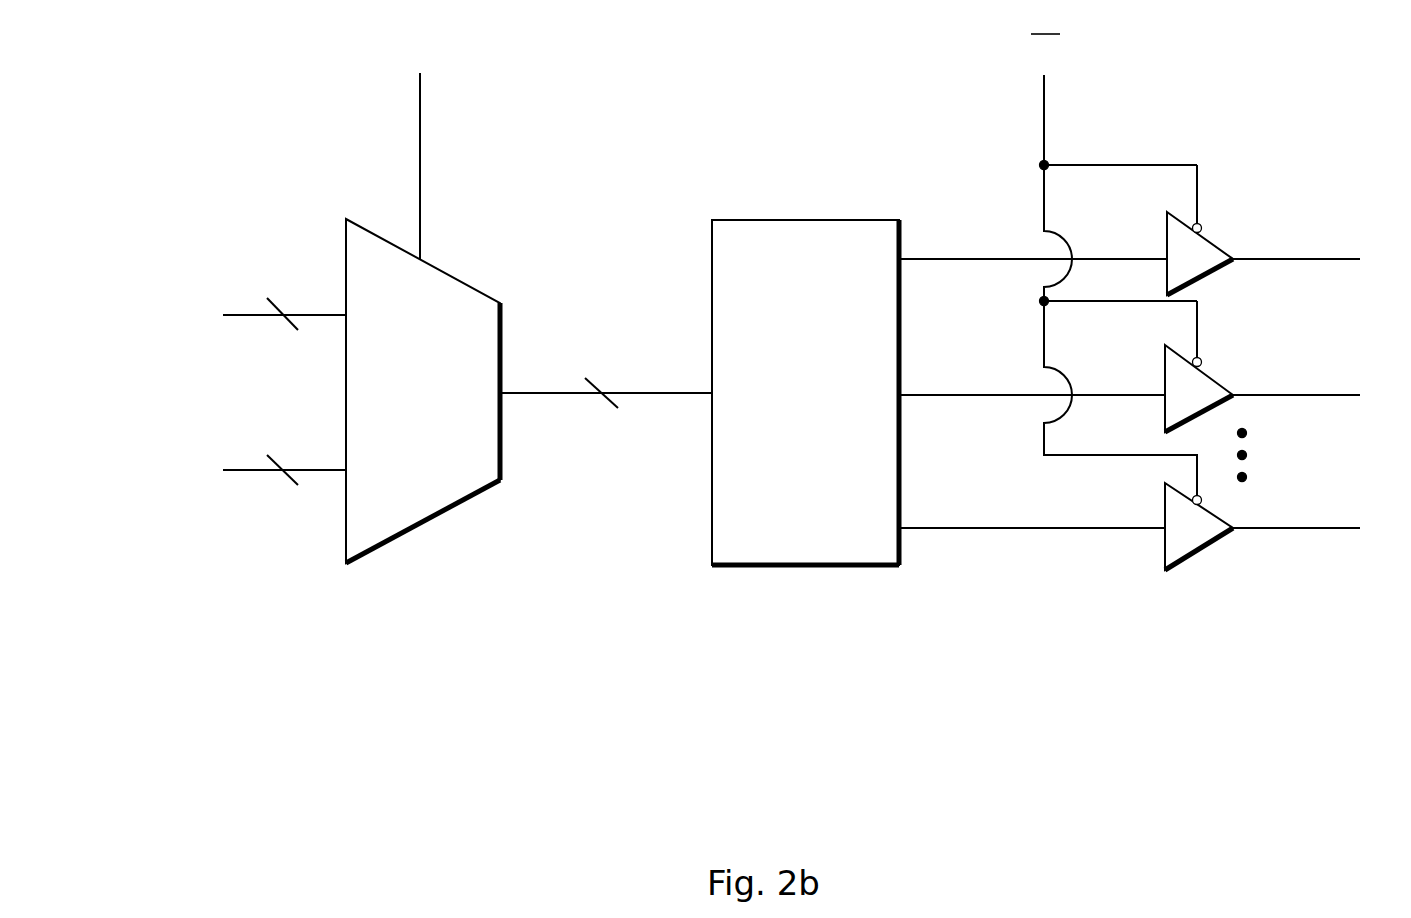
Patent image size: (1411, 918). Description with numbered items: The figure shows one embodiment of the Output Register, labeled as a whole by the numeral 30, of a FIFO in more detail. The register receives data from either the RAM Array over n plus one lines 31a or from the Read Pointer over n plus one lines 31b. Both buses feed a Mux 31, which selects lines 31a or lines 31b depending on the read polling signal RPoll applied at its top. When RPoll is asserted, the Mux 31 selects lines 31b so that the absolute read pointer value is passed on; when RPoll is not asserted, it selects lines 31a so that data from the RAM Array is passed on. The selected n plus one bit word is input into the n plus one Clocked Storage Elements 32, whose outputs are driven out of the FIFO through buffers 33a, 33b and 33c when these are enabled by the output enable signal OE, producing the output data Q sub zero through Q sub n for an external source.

The read pointer / output circuit 30 is at (741, 838).
The Mux 31 is at (423, 391).
The n+1 lines from the RAM Array 31a is at (284, 314).
The n+1 lines from the Read Pointer 31b is at (284, 467).
The Clocked Storage Elements 32 is at (805, 392).
The buffer 33a is at (1200, 253).
The buffer 33b is at (1199, 388).
The buffer 33c is at (1199, 526).